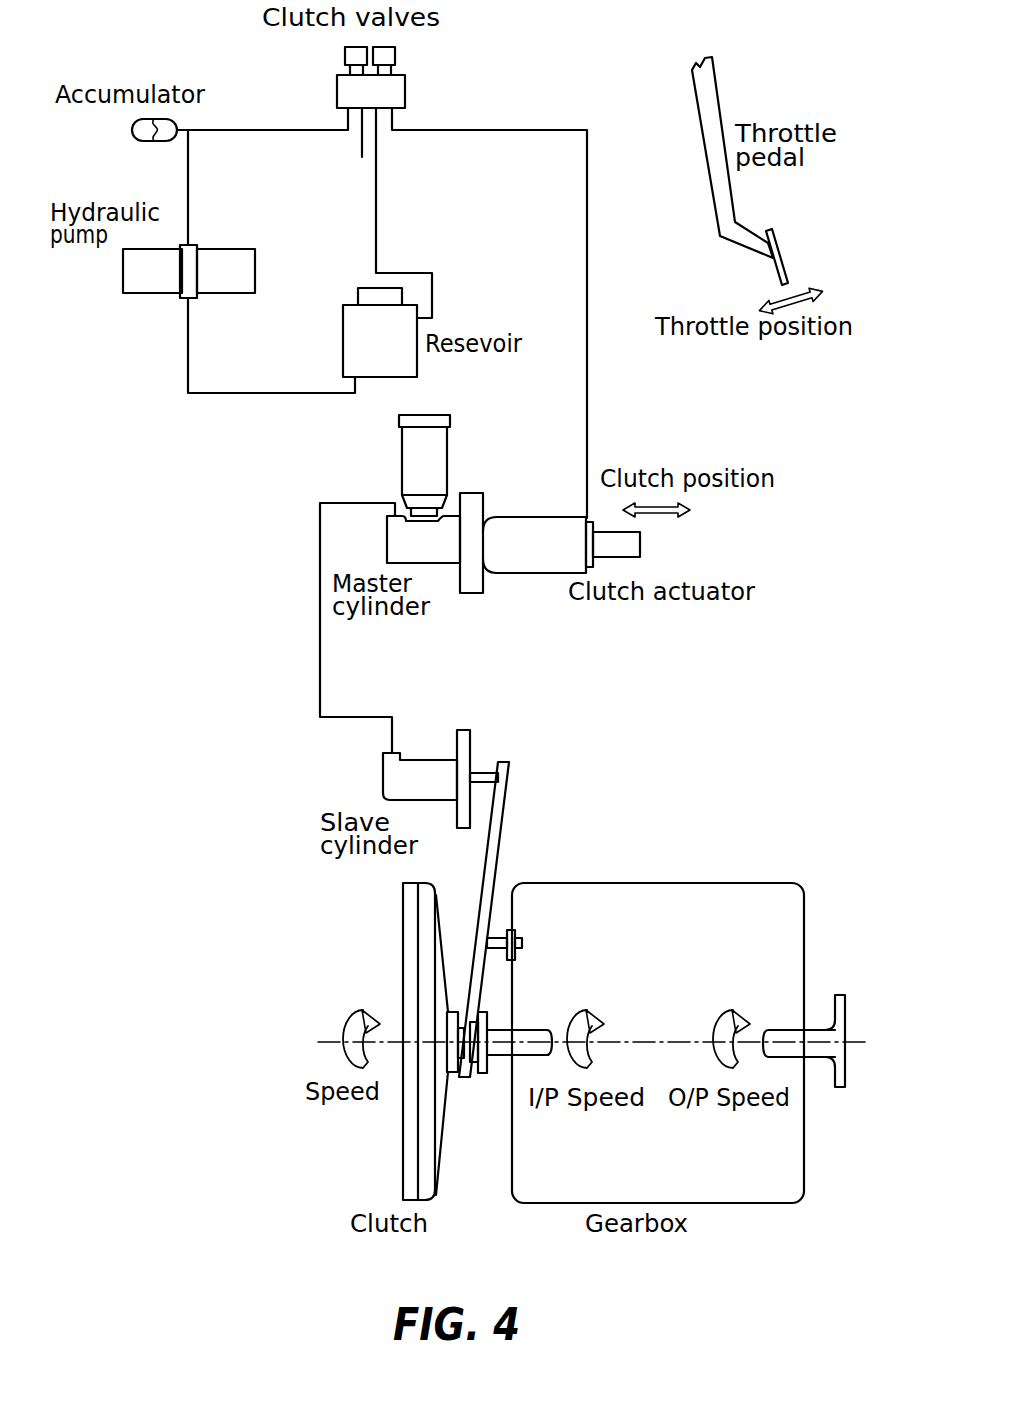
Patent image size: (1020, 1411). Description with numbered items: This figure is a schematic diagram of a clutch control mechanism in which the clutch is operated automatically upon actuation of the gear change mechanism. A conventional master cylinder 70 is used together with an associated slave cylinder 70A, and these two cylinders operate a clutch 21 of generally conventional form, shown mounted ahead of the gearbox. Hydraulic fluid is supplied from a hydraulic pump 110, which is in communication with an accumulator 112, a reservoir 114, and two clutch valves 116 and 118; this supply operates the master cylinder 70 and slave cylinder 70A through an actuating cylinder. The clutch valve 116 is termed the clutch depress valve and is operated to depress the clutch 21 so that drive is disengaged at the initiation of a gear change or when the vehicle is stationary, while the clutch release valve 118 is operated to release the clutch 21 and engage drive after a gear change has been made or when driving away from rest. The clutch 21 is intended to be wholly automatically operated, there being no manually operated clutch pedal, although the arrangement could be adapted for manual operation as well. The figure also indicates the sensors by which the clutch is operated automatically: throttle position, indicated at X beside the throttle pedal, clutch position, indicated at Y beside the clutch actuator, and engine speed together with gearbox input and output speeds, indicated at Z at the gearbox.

The hydraulic pump 110 is at (138, 297).
The accumulator 112 is at (132, 133).
The reservoir 114 is at (345, 330).
The clutch depress valve 116 is at (397, 55).
The clutch release valve 118 is at (345, 55).
The master cylinder 70 is at (513, 504).
The slave cylinder 70A is at (428, 760).
The clutch 21 is at (330, 943).
The throttle position X is at (747, 367).
The clutch position Y is at (722, 534).
The engine speed and gearbox input and output speeds Z is at (656, 920).